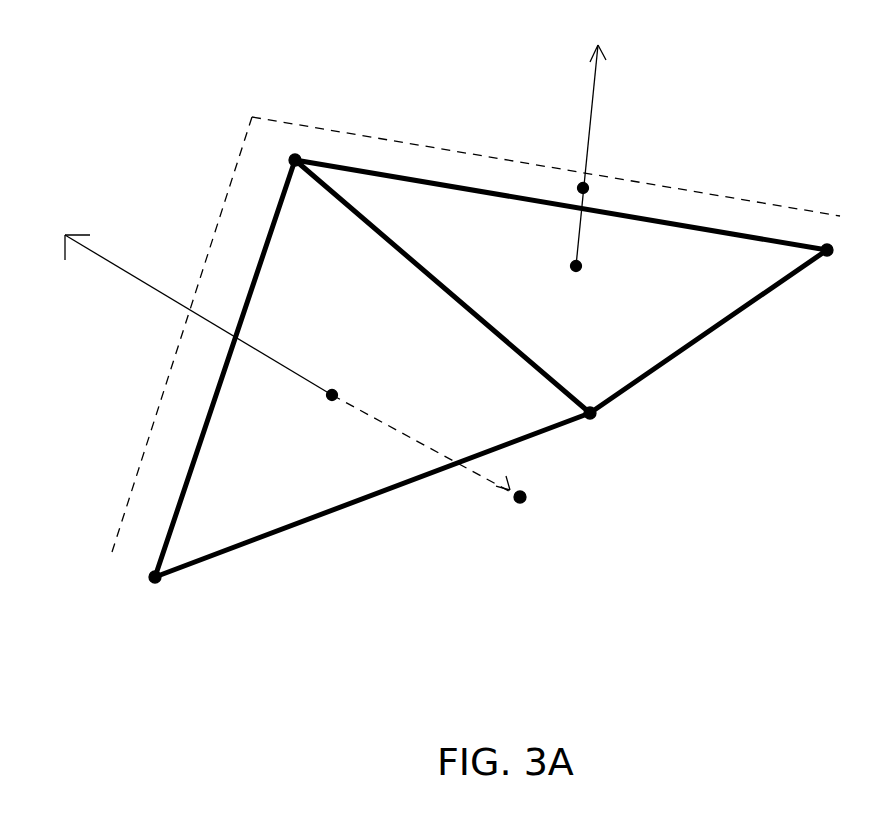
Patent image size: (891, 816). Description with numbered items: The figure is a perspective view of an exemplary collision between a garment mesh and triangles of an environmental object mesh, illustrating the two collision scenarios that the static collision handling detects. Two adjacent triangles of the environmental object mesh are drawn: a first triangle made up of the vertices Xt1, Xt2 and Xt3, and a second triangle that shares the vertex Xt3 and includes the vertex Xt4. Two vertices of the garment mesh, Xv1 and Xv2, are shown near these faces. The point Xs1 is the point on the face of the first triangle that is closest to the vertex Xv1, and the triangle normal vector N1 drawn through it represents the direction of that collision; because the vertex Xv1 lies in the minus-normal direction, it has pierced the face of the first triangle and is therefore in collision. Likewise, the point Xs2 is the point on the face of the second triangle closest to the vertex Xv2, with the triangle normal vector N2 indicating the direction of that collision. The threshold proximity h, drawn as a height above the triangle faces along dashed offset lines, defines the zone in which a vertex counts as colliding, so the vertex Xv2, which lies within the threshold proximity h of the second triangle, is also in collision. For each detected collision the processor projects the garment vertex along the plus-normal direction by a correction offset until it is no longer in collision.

The triangle vertex Xt1 is at (314, 135).
The triangle vertex Xt2 is at (180, 602).
The triangle vertex Xt3 is at (612, 437).
The triangle vertex Xt4 is at (851, 276).
The closest point on triangle face Xs1 is at (365, 387).
The garment mesh vertex Xv1 is at (540, 534).
The closest point on triangle face Xs2 is at (611, 277).
The garment mesh vertex Xv2 is at (616, 163).
The triangle normal vector N1 is at (263, 343).
The triangle normal vector N2 is at (590, 133).
The threshold proximity h is at (487, 415).